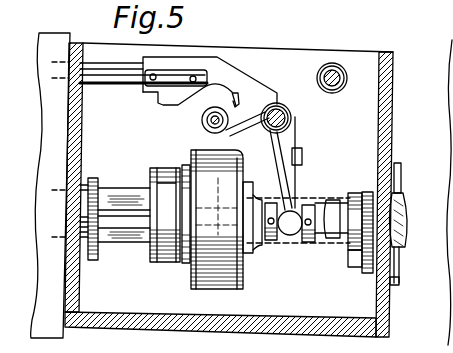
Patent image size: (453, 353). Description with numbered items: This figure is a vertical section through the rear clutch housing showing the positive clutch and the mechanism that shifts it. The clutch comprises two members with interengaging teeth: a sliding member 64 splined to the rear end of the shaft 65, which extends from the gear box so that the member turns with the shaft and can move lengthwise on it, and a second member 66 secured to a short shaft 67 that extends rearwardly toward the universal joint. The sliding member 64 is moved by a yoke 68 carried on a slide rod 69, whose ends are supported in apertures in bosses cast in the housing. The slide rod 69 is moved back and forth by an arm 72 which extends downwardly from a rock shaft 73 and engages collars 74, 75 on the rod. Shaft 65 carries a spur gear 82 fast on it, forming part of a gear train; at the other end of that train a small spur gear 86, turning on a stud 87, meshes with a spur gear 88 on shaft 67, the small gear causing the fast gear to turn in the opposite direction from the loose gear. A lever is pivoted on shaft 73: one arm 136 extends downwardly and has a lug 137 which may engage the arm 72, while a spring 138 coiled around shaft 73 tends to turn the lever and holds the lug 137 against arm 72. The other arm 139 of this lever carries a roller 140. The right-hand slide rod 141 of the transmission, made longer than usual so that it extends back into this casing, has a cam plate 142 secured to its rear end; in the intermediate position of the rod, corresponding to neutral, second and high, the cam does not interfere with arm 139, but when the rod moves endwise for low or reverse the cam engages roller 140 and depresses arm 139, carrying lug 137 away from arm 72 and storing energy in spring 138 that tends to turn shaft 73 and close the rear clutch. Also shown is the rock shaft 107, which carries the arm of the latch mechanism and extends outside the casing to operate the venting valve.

The slide rod 141 is at (96, 87).
The cam plate 142 is at (160, 106).
The roller 140 is at (206, 110).
The lever arm 139 is at (236, 111).
The spring 138 is at (249, 131).
The rock shaft 73 is at (287, 111).
The rock shaft 107 is at (347, 82).
The lever arm 136 is at (288, 141).
The lug 137 is at (303, 158).
The arm 72 is at (284, 183).
The shaft 65 is at (121, 200).
The spur gear 82 is at (93, 260).
The sliding clutch member 64 is at (180, 266).
The yoke 68 is at (168, 178).
The clutch member 66 is at (198, 289).
The slide rod 69 is at (321, 212).
The collar 74 is at (270, 241).
The collar 75 is at (308, 243).
The stud 87 is at (343, 251).
The spur gear 88 is at (367, 192).
The small spur gear 86 is at (359, 268).
The short shaft 67 is at (400, 217).